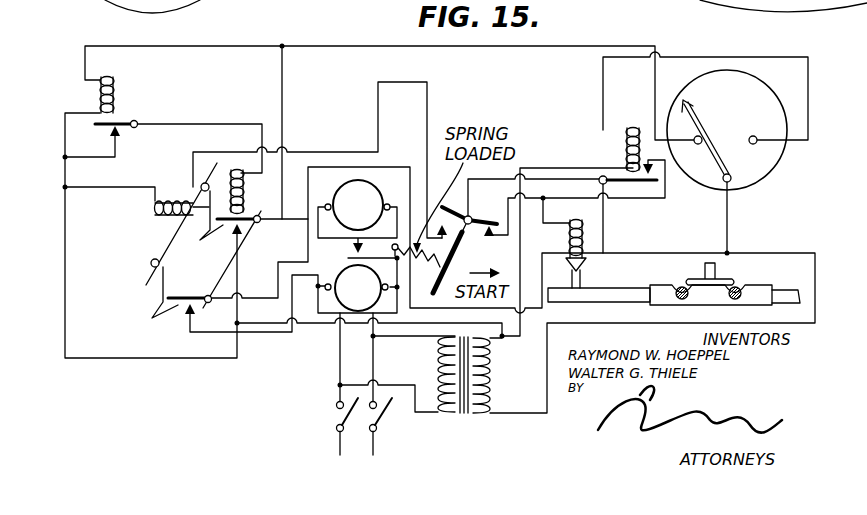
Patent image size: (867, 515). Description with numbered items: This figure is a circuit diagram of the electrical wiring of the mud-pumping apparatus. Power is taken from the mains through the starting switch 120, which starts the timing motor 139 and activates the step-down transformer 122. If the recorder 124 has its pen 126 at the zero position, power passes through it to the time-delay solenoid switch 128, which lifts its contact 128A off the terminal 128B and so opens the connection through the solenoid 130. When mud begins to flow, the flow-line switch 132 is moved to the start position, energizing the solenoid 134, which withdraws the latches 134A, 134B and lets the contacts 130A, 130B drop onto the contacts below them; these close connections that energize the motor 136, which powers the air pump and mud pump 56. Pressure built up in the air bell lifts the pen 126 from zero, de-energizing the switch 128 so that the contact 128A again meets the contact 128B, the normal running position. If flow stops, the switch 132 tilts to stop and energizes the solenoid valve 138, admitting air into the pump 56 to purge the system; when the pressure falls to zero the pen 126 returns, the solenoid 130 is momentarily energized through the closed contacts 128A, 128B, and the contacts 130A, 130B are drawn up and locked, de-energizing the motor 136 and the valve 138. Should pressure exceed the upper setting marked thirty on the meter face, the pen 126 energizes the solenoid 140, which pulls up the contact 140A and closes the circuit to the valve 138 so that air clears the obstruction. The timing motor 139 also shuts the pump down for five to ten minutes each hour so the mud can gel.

The time-delay solenoid switch 128 is at (116, 82).
The contact 128A is at (132, 120).
The terminal 128B is at (124, 130).
The solenoid 134 is at (172, 200).
The latch 134A is at (203, 230).
The latch 134B is at (158, 302).
The solenoid 130 is at (245, 196).
The contact 130A is at (259, 224).
The contact 130B is at (182, 296).
The motor 136 is at (357, 180).
The timing motor 139 is at (343, 297).
The flow-line switch 132 is at (470, 228).
The starting switch 120 is at (388, 416).
The step-down transformer 122 is at (488, 367).
The solenoid valve 138 is at (584, 247).
The solenoid 140 is at (625, 147).
The contact 140A is at (645, 185).
The recorder 124 is at (755, 185).
The pen 126 is at (700, 122).
The mud pump 56 is at (760, 290).